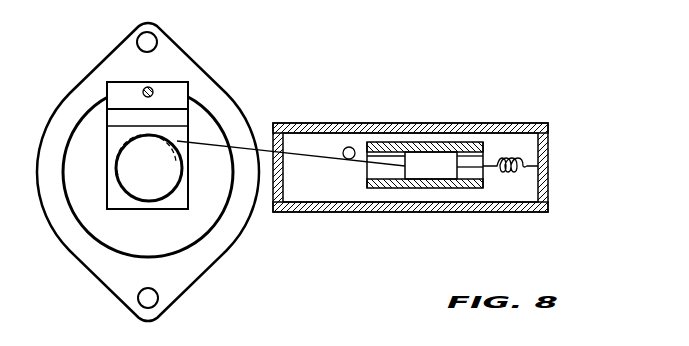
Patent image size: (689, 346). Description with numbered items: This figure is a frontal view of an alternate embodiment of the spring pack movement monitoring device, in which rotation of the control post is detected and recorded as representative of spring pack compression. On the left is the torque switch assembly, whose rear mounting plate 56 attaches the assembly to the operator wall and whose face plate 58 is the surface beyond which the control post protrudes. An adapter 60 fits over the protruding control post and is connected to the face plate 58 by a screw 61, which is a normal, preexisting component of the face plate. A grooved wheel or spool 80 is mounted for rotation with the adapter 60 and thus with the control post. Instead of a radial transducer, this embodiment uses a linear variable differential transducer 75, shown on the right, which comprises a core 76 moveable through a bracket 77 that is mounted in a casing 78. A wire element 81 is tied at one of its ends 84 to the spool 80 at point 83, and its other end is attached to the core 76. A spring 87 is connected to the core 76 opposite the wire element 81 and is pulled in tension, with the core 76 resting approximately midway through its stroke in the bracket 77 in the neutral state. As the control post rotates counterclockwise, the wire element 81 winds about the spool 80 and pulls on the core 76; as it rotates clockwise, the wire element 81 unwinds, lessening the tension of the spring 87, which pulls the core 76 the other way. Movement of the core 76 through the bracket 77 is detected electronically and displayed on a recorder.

The rear mounting plate 56 is at (172, 25).
The face plate 58 is at (210, 103).
The adapter 60 is at (110, 118).
The screw 61 is at (150, 85).
The linear variable differential transducer 75 is at (496, 116).
The core 76 is at (428, 160).
The bracket 77 is at (478, 212).
The casing 78 is at (327, 124).
The grooved wheel (spool) 80 is at (127, 182).
The wire element 81 is at (217, 150).
The point 83 is at (117, 171).
The end of wire element 84 is at (393, 173).
The spring 87 is at (528, 160).